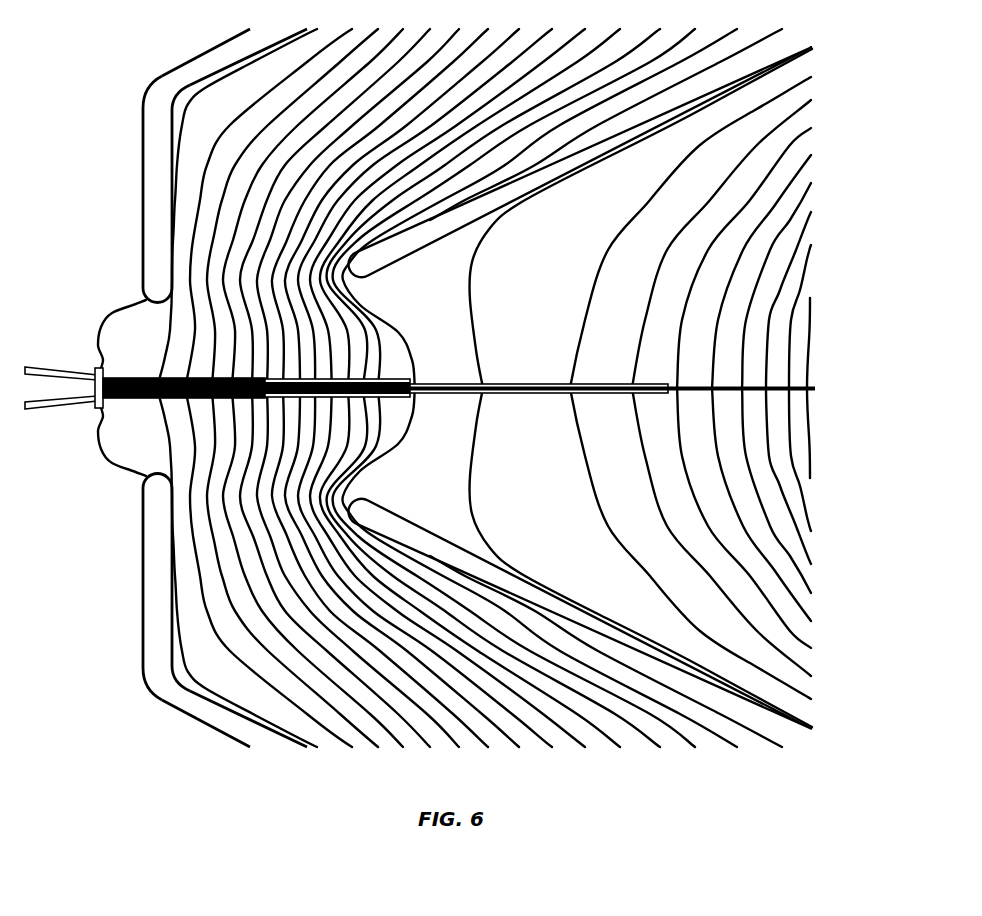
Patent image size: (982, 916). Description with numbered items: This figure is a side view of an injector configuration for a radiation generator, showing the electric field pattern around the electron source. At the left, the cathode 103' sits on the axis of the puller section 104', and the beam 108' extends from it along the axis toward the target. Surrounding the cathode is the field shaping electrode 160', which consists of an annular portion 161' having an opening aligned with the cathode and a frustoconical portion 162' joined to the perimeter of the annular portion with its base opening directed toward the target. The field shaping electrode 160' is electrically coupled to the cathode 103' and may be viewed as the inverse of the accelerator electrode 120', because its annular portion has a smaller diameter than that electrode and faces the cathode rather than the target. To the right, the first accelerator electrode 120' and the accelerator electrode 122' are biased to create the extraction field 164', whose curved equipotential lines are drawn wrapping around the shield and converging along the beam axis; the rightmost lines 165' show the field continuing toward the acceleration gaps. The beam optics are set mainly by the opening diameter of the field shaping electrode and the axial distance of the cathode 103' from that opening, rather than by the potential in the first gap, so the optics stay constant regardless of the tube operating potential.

The field shaping electrode 160' is at (177, 162).
The annular portion 161' is at (142, 189).
The frustoconical portion 162' is at (234, 53).
The cathode 103' is at (64, 374).
The puller section 104' is at (196, 611).
The extraction field 164' is at (138, 587).
The beam 108' is at (483, 383).
The accelerator electrode 122' is at (600, 162).
The first accelerator electrode 120' is at (615, 614).
The electric field lines 165' is at (490, 388).